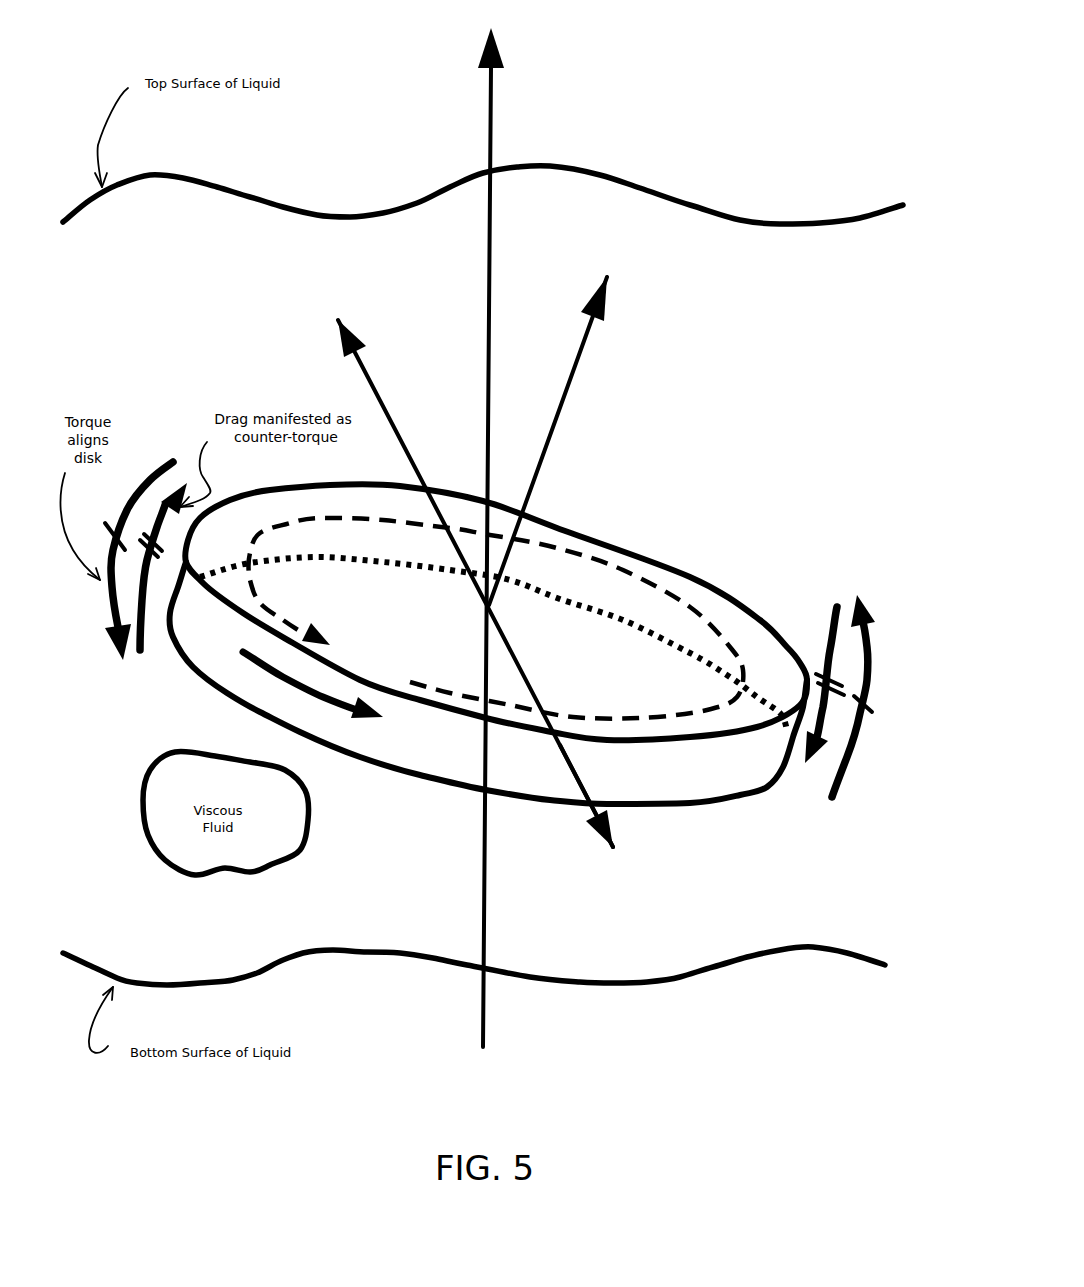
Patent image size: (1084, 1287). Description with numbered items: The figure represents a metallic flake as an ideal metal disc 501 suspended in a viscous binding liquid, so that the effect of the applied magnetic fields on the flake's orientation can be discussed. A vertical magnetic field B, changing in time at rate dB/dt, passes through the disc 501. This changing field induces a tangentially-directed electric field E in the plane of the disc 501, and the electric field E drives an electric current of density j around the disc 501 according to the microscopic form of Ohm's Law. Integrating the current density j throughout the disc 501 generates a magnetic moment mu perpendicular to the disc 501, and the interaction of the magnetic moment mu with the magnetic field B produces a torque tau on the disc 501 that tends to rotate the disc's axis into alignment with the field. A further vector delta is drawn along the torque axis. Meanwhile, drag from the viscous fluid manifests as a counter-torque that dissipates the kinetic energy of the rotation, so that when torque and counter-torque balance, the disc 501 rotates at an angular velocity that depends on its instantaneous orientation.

The metal disc 501 is at (530, 644).
The magnetic field B is at (636, 31).
The torque tau is at (343, 275).
The magnetic moment mu is at (691, 287).
The displacement vector delta is at (648, 861).
The electric field E is at (377, 590).
The electric current density j is at (413, 721).